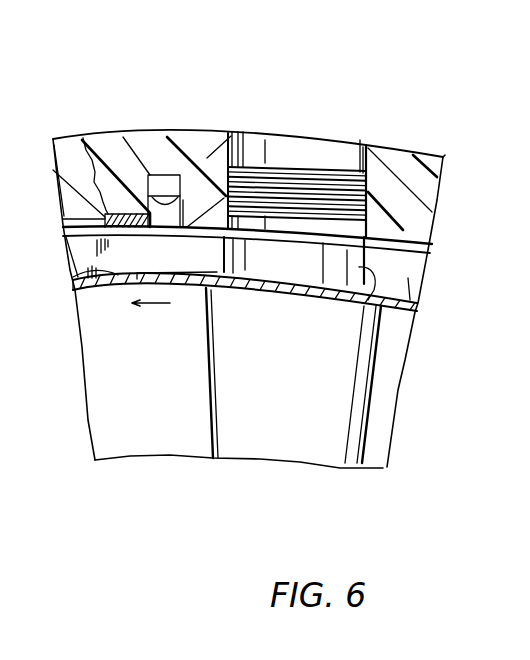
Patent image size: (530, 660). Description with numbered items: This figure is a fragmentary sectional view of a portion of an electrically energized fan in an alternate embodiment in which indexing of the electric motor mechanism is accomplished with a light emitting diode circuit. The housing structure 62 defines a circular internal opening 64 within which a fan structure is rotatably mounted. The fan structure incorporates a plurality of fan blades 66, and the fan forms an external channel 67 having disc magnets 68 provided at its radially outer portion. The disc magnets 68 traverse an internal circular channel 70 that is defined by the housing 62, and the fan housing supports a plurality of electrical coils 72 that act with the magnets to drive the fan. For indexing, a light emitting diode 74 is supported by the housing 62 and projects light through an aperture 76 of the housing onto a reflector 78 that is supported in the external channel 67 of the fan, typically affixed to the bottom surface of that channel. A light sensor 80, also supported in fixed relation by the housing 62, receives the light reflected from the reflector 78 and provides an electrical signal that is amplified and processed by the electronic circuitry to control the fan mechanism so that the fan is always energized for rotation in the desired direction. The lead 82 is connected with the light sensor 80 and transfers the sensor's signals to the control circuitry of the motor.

The housing structure 62 is at (202, 132).
The circular internal opening 64 is at (297, 292).
The fan blades 66 is at (223, 393).
The external channel 67 is at (78, 276).
The disc magnets 68 is at (367, 297).
The internal circular channel 70 is at (387, 352).
The electrical coils 72 is at (368, 192).
The light emitting diode 74 is at (162, 178).
The aperture 76 is at (163, 232).
The reflector 78 is at (143, 279).
The light sensor 80 is at (126, 214).
The lead 82 is at (80, 113).